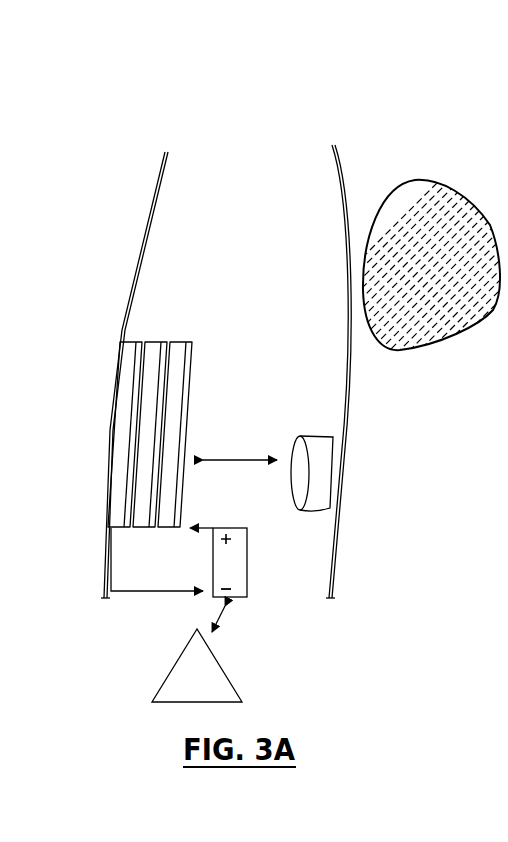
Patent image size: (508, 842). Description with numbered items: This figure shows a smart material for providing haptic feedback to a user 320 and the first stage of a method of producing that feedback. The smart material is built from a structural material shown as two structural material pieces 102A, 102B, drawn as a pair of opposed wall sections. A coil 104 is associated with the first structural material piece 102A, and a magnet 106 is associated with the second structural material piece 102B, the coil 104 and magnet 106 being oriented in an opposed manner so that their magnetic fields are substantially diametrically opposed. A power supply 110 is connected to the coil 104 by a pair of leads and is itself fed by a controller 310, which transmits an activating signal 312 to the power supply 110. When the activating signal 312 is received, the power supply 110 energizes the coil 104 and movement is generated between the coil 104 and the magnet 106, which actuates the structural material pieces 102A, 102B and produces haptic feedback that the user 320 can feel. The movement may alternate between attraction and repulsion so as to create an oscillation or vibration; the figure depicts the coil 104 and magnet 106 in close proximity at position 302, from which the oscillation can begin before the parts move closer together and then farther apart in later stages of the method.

The structural material piece 102A is at (153, 176).
The structural material piece 102B is at (345, 170).
The coil 104 is at (180, 342).
The magnet 106 is at (325, 471).
The power supply 110 is at (247, 573).
The position 302 is at (240, 446).
The controller 310 is at (218, 697).
The activating signal 312 is at (221, 627).
The user 320 is at (455, 283).